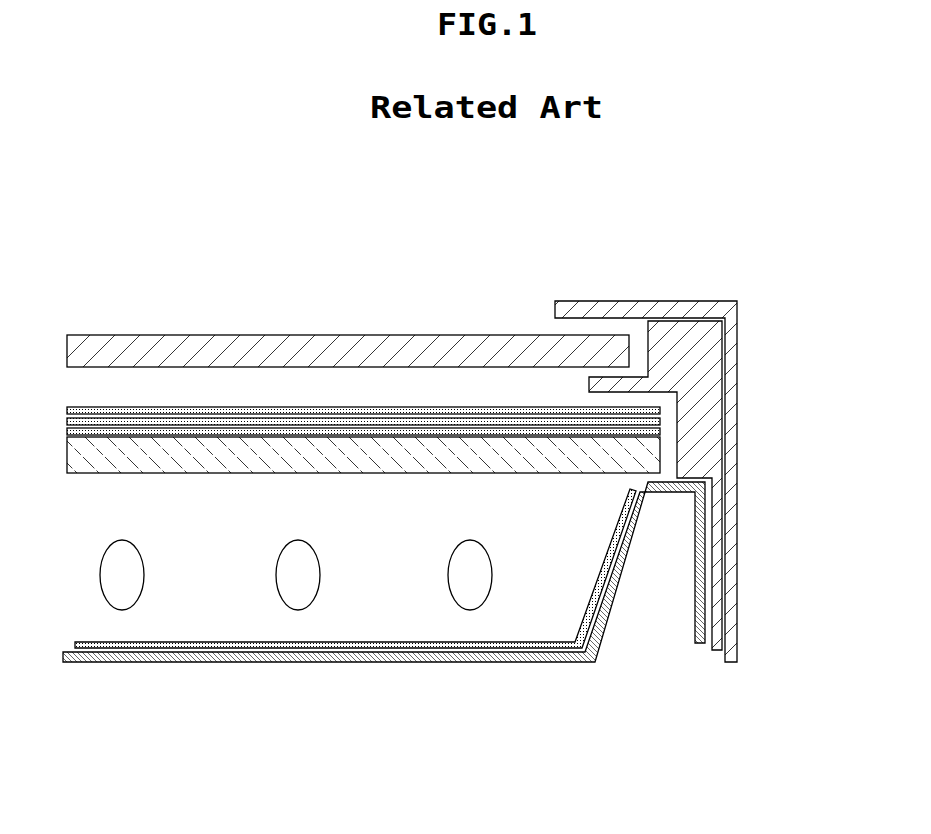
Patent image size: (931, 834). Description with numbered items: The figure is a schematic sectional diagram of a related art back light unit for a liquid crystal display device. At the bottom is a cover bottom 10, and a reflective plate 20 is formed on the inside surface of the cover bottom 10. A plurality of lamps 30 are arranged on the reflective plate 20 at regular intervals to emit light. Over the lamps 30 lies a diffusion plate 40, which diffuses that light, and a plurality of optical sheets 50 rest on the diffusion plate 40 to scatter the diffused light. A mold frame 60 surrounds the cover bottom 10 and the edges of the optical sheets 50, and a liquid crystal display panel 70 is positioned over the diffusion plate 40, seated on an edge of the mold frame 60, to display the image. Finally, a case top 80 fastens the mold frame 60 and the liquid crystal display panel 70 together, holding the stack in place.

The cover bottom 10 is at (217, 667).
The reflective plate 20 is at (382, 650).
The lamps 30 is at (296, 598).
The diffusion plate 40 is at (653, 455).
The optical sheets 50 is at (653, 420).
The mold frame 60 is at (717, 359).
The liquid crystal display panel 70 is at (348, 342).
The case top 80 is at (735, 307).